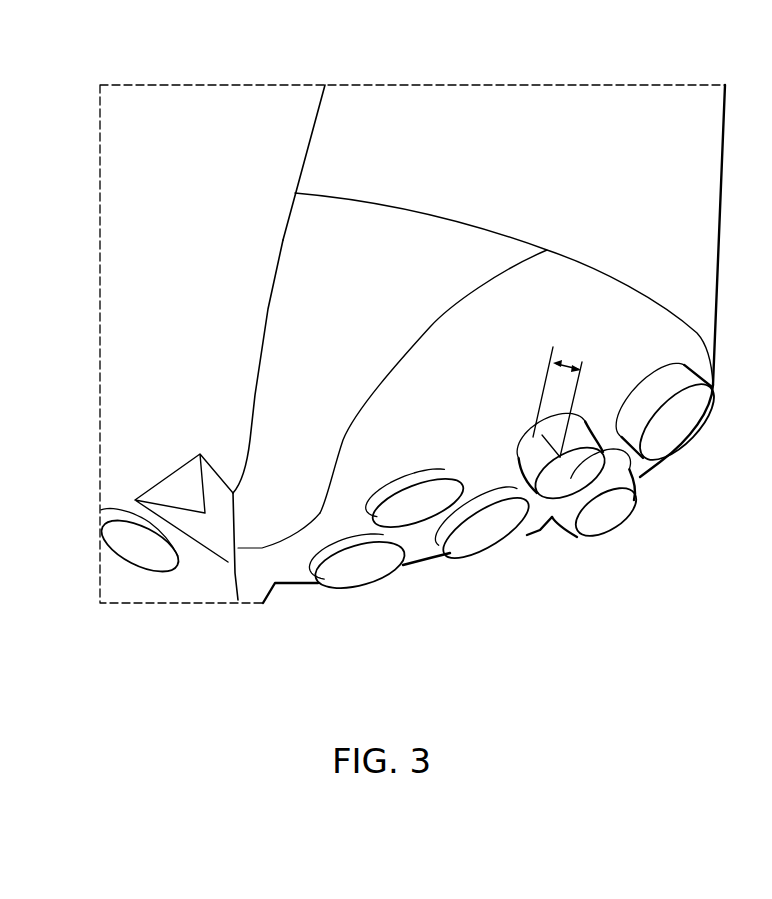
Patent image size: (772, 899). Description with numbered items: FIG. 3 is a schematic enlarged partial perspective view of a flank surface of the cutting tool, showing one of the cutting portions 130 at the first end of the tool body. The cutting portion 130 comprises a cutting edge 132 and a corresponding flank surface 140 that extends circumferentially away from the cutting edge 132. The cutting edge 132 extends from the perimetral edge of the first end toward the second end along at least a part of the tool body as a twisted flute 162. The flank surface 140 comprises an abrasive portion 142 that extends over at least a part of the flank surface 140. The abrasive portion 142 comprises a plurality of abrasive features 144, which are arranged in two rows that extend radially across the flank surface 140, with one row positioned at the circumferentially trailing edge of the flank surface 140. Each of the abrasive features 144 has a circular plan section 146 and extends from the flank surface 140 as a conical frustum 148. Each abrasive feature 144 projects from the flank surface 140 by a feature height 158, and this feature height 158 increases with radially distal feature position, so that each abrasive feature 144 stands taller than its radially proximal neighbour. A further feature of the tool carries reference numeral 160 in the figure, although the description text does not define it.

The cutting portion 130 is at (190, 402).
The cutting edge 132 is at (268, 310).
The flank surface 140 is at (392, 445).
The abrasive portion 142 is at (412, 598).
The abrasive feature 144 is at (463, 563).
The circular plan section 146 is at (610, 527).
The conical frustum 148 is at (573, 540).
The feature height 158 is at (563, 360).
The gauge region 160 is at (277, 115).
The twisted flute 162 is at (203, 113).